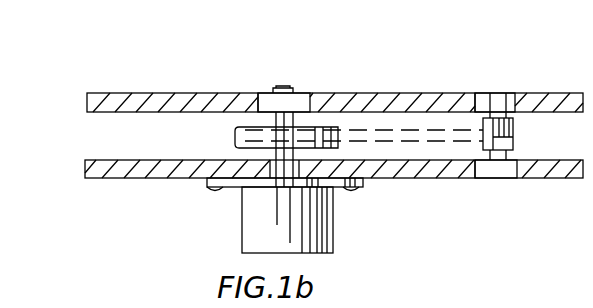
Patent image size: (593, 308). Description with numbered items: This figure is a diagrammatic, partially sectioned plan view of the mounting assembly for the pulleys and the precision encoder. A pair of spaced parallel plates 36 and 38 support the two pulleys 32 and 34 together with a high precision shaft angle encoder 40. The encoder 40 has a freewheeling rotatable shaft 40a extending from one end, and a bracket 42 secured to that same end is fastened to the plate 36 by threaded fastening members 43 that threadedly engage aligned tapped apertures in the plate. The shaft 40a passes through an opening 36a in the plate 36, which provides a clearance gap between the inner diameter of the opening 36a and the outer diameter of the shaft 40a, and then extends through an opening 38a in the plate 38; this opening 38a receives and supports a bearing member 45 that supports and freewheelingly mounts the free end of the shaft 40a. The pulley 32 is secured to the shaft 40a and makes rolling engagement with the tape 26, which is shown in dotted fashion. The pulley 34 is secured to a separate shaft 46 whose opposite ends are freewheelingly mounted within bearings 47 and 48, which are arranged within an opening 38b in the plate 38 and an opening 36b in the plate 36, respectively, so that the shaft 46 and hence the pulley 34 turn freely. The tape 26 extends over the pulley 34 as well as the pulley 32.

The tape 26 is at (386, 128).
The pulley 32 is at (236, 134).
The pulley 34 is at (513, 141).
The plate 36 is at (90, 179).
The opening 36a is at (268, 178).
The opening 36b is at (486, 177).
The plate 38 is at (115, 93).
The opening 38a is at (262, 93).
The opening 38b is at (485, 92).
The shaft angle encoder 40 is at (318, 236).
The rotatable shaft 40a is at (287, 88).
The bracket 42 is at (226, 190).
The threaded fastening members 43 is at (208, 192).
The bearing member 45 is at (303, 98).
The shaft 46 is at (497, 112).
The bearing 47 is at (507, 93).
The bearing 48 is at (507, 177).